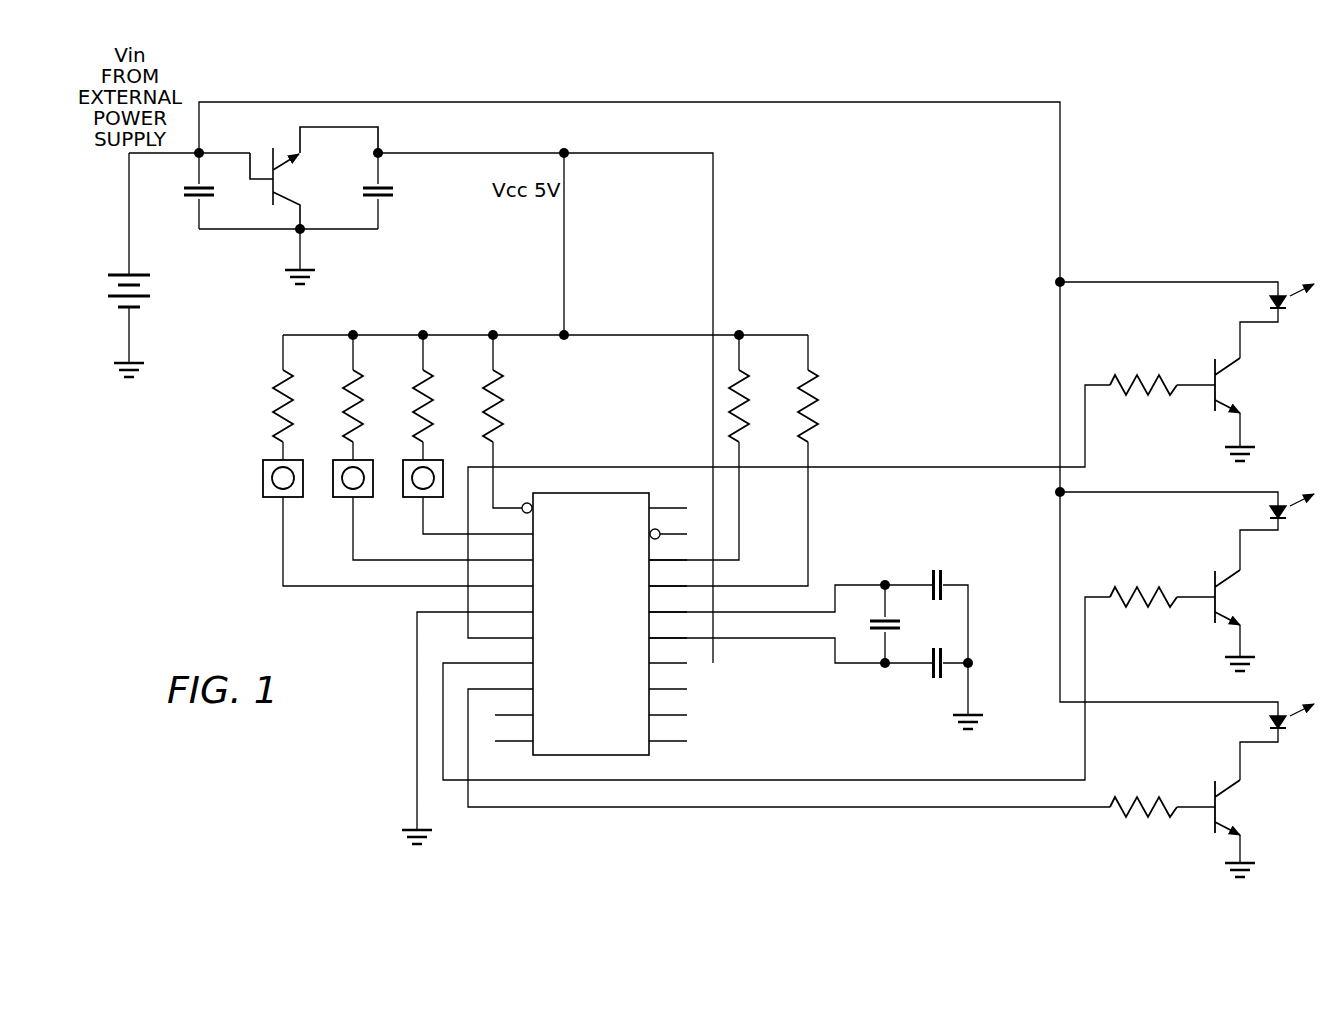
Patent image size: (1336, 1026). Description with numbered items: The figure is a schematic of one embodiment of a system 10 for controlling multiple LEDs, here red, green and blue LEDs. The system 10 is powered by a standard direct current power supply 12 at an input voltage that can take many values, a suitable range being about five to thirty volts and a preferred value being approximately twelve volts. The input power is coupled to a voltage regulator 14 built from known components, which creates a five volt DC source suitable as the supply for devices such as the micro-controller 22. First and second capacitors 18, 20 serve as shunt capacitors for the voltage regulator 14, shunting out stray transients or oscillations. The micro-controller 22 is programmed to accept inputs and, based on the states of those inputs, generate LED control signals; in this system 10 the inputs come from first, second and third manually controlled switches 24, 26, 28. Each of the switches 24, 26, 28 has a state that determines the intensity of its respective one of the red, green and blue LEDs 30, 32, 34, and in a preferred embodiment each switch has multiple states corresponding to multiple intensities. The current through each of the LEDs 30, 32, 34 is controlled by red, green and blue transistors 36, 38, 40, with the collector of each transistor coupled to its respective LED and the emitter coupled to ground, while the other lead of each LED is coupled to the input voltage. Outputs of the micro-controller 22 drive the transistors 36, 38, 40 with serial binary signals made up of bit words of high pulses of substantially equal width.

The system 10 is at (1196, 120).
The power supply 12 is at (153, 295).
The voltage regulator 14 is at (290, 148).
The first capacitor 18 is at (193, 197).
The second capacitor 20 is at (387, 198).
The micro-controller 22 is at (585, 493).
The first switch 24 is at (263, 470).
The second switch 26 is at (333, 470).
The third switch 28 is at (403, 470).
The red LED 30 is at (1293, 303).
The green LED 32 is at (1293, 513).
The blue LED 34 is at (1293, 723).
The red transistor 36 is at (1228, 364).
The green transistor 38 is at (1228, 574).
The blue transistor 40 is at (1228, 784).